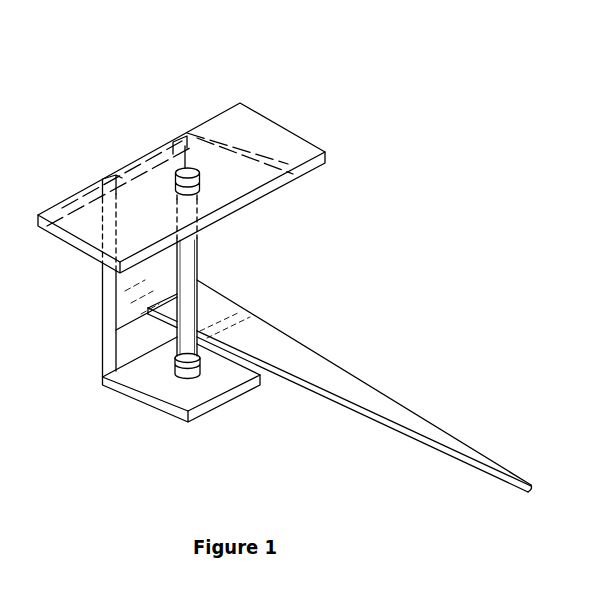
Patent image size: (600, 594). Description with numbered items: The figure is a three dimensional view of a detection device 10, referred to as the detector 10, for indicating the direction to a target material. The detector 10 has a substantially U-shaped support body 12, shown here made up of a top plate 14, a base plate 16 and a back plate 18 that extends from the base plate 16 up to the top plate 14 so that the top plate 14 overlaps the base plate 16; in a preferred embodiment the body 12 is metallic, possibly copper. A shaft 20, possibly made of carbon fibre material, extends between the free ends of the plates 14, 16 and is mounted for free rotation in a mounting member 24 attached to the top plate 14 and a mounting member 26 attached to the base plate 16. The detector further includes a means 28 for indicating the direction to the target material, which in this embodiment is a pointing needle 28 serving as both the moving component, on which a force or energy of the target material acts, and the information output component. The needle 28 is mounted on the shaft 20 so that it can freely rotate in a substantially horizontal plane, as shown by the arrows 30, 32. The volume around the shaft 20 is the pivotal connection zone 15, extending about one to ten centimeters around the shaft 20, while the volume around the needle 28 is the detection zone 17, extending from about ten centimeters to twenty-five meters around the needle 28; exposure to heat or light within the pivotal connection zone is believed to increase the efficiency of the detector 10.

The detection device 10 is at (418, 60).
The support body 12 is at (203, 83).
The top plate 14 is at (271, 132).
The pivotal connection zone 15 is at (305, 217).
The base plate 16 is at (158, 380).
The detection zone 17 is at (392, 446).
The back plate 18 is at (123, 289).
The shaft 20 is at (194, 255).
The mounting member 24 is at (185, 170).
The mounting member 26 is at (199, 366).
The pointing needle 28 is at (283, 345).
The arrow 30 is at (410, 398).
The arrow 32 is at (373, 420).